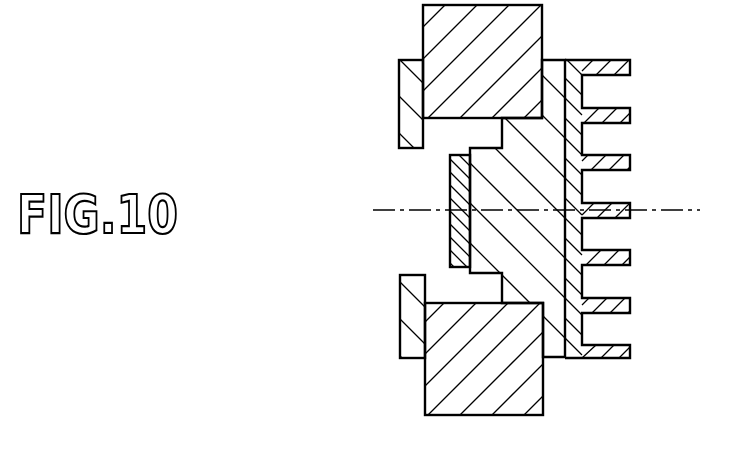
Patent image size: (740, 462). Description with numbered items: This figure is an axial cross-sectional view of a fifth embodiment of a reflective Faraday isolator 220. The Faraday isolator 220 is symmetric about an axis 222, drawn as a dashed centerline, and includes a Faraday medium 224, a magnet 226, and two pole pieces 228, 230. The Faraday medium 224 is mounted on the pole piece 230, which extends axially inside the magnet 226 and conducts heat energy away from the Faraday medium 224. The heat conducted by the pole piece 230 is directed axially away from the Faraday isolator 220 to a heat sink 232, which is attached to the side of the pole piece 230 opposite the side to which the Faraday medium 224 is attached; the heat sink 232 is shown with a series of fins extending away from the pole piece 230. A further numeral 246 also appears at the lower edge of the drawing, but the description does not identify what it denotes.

The Faraday isolator 220 is at (357, 108).
The axis 222 is at (392, 212).
The Faraday medium 224 is at (450, 173).
The magnet 226 is at (465, 416).
The pole piece 228 is at (412, 60).
The pole piece 230 is at (553, 60).
The heat sink 232 is at (630, 113).
The retaining flange 246 is at (536, 461).